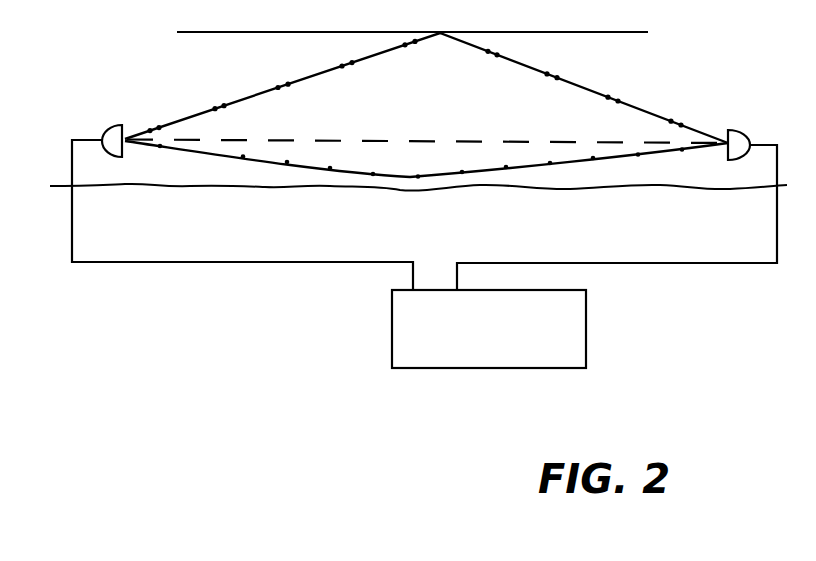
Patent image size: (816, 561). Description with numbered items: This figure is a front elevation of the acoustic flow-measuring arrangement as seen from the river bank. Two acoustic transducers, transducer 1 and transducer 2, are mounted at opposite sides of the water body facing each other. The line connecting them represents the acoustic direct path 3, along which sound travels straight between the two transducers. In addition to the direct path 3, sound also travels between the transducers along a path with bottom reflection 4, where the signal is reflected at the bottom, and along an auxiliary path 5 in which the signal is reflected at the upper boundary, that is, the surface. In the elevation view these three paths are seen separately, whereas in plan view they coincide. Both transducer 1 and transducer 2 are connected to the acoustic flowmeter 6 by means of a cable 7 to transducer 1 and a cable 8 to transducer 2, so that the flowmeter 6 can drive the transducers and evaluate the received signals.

The transducer 1 is at (107, 132).
The transducer 2 is at (757, 120).
The direct path 3 is at (380, 141).
The path with bottom reflection 4 is at (222, 160).
The auxiliary path, upper boundary reflection 5 is at (253, 93).
The acoustic flowmeter 6 is at (577, 357).
The cable to transducer 1 7 is at (283, 263).
The cable to transducer 2 8 is at (708, 266).